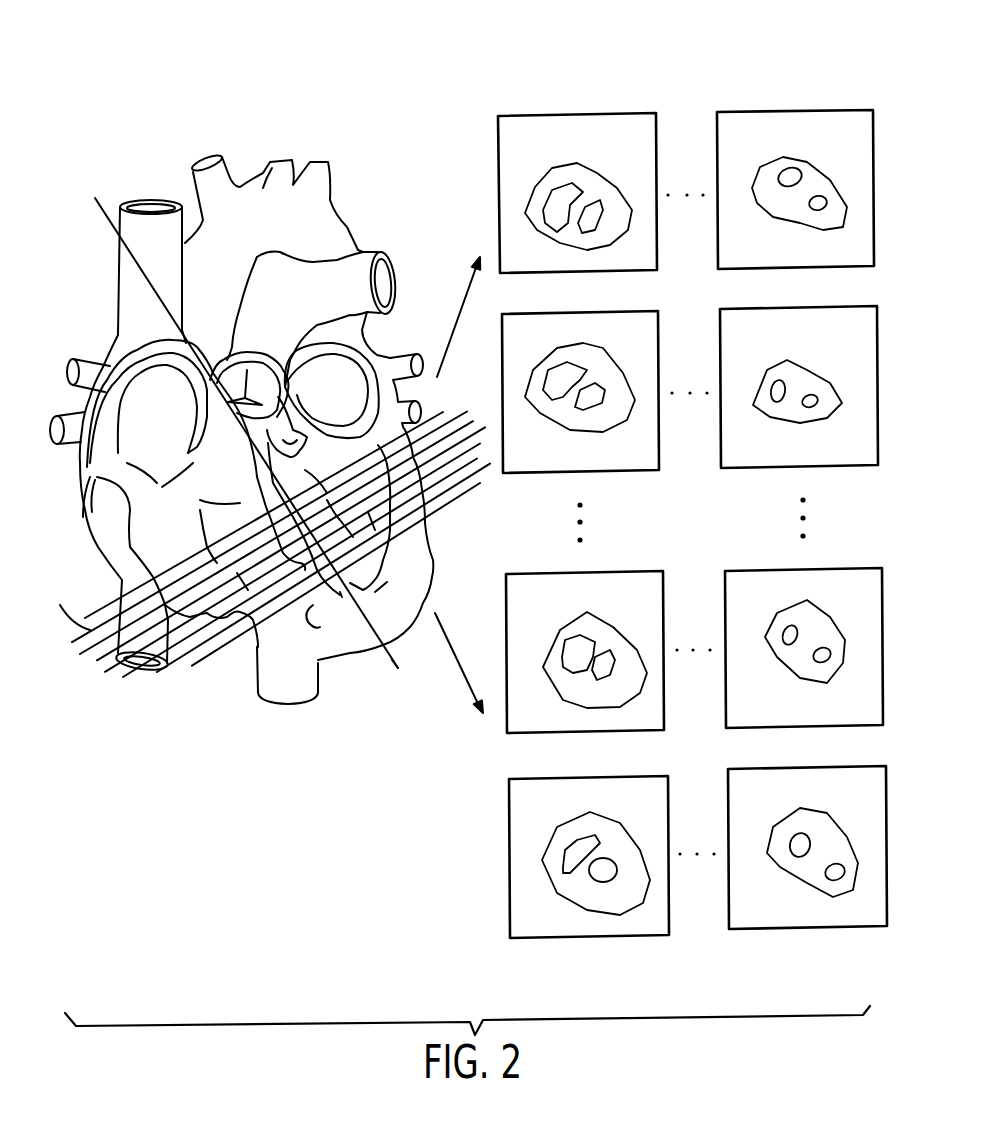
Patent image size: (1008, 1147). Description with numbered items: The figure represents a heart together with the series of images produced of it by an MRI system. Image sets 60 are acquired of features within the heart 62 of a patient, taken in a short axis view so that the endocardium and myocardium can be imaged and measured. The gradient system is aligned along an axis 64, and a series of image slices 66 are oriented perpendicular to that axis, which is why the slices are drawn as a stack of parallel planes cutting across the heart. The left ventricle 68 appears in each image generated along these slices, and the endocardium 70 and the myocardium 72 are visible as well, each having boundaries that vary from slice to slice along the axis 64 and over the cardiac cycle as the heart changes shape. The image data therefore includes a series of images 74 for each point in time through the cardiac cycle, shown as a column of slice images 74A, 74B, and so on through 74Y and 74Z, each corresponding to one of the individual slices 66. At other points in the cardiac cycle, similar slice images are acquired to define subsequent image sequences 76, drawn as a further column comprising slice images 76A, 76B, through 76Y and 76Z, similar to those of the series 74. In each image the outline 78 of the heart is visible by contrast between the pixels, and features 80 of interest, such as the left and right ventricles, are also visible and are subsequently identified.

The image sets 60 is at (266, 389).
The heart 62 is at (365, 645).
The axis 64 is at (398, 668).
The image slices 66 is at (98, 603).
The left ventricle 68 is at (383, 575).
The endocardium 70 is at (387, 582).
The myocardium 72 is at (342, 597).
The series of images 74 is at (575, 98).
The first slice image of series 74 74A is at (497, 165).
The second slice image of series 74 74B is at (600, 313).
The penultimate slice image of series 74 74Y is at (612, 573).
The last slice image of series 74 74Z is at (613, 778).
The subsequent image sequences 76 is at (793, 96).
The first slice image of sequence 76 76A is at (807, 169).
The second slice image of sequence 76 76B is at (827, 308).
The penultimate slice image of sequence 76 76Y is at (827, 568).
The last slice image of sequence 76 76Z is at (835, 768).
The outline of the heart 78 is at (790, 176).
The features of interest 80 is at (790, 176).